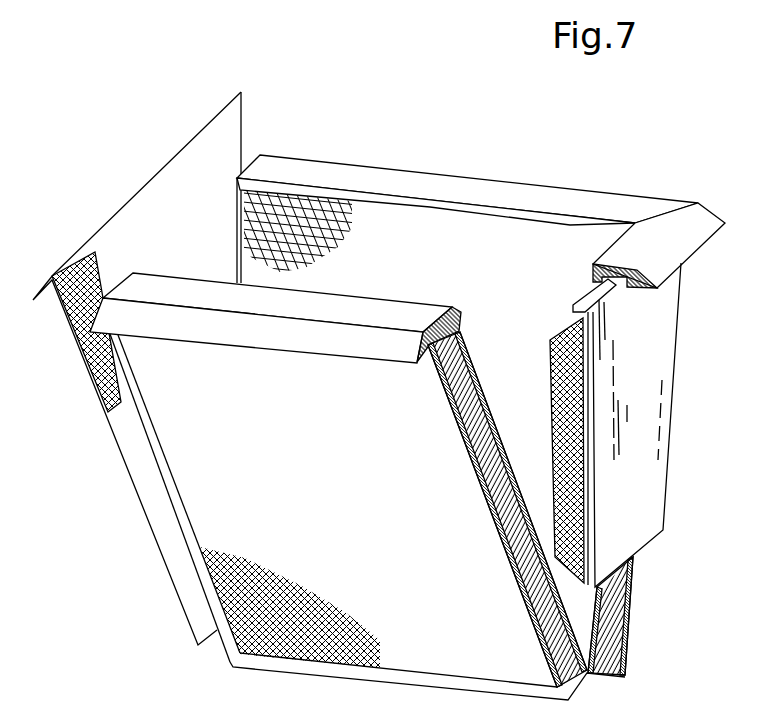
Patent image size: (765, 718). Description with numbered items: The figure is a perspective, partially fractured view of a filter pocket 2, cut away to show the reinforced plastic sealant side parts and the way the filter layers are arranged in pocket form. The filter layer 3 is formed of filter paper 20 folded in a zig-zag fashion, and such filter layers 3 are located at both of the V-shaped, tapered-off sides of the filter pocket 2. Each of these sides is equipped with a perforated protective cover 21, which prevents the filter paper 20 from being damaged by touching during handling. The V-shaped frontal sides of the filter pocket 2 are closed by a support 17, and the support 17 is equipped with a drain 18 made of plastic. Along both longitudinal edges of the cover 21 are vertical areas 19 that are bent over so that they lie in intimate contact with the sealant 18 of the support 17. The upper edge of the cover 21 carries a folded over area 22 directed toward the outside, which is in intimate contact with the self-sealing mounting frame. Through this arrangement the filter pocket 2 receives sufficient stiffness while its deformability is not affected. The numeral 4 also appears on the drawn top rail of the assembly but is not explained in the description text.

The filter pocket 2 is at (481, 174).
The filter layer 3 is at (533, 509).
The top rail 4 is at (334, 172).
The support 17 is at (143, 223).
The drain 18 is at (653, 462).
The vertical area 19 is at (560, 338).
The filter paper 20 is at (467, 448).
The perforated protective cover 21 is at (483, 503).
The folded over area 22 is at (42, 283).